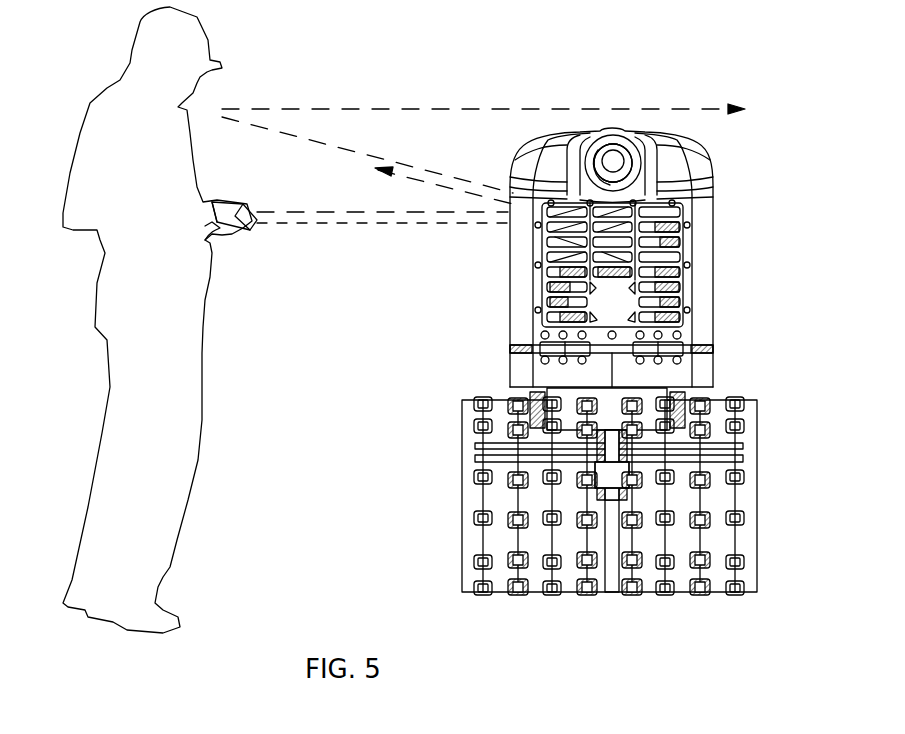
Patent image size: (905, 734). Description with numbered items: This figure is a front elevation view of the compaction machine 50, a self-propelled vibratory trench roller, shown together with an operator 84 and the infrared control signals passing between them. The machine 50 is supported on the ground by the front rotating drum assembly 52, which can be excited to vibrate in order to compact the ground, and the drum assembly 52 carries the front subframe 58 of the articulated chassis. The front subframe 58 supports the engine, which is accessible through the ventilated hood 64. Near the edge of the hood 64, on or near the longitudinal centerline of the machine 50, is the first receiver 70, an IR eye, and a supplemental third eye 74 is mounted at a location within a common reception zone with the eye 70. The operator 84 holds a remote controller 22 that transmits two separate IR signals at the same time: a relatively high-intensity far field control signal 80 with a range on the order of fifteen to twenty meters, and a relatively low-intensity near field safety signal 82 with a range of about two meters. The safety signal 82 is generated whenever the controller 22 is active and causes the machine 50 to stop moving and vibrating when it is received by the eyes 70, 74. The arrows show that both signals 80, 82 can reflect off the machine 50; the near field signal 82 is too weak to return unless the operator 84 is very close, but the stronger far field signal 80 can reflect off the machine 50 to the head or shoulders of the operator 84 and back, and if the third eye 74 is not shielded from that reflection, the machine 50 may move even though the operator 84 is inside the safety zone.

The operator 84 is at (78, 101).
The remote controller 22 is at (215, 258).
The control signal 80 is at (374, 108).
The safety signal 82 is at (360, 225).
The compaction machine 50 is at (770, 261).
The first receiver 70 is at (695, 175).
The third eye 74 is at (612, 128).
The ventilated hood 64 is at (705, 232).
The front subframe 58 is at (700, 372).
The front rotating drum assembly 52 is at (752, 490).